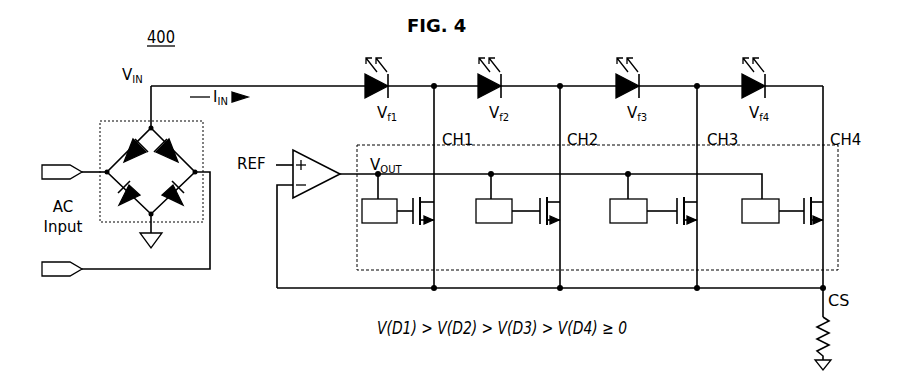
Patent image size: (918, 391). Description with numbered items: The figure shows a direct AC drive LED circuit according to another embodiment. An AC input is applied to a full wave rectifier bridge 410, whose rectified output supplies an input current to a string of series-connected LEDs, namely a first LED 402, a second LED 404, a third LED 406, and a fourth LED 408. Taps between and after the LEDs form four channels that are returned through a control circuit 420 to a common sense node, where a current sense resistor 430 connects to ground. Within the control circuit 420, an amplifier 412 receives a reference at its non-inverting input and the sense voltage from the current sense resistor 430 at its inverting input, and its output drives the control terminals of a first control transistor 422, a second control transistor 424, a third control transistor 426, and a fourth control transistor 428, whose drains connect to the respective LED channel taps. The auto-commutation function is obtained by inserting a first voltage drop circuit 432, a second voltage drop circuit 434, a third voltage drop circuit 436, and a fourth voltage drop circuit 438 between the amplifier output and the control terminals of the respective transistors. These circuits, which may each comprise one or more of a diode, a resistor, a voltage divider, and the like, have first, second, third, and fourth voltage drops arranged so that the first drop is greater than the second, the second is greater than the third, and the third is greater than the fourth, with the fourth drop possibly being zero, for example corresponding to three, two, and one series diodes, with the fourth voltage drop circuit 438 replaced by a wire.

The first LED 402 is at (367, 79).
The second LED 404 is at (480, 79).
The third LED 406 is at (618, 79).
The fourth LED 408 is at (743, 79).
The full wave rectifier bridge 410 is at (130, 121).
The amplifier 412 is at (309, 199).
The control circuit 420 is at (357, 146).
The first control transistor 422 is at (412, 226).
The second control transistor 424 is at (539, 226).
The third control transistor 426 is at (676, 226).
The fourth control transistor 428 is at (803, 226).
The current sense resistor 430 is at (818, 330).
The first voltage drop circuit 432 is at (362, 229).
The second voltage drop circuit 434 is at (486, 226).
The third voltage drop circuit 436 is at (623, 226).
The fourth voltage drop circuit 438 is at (750, 226).